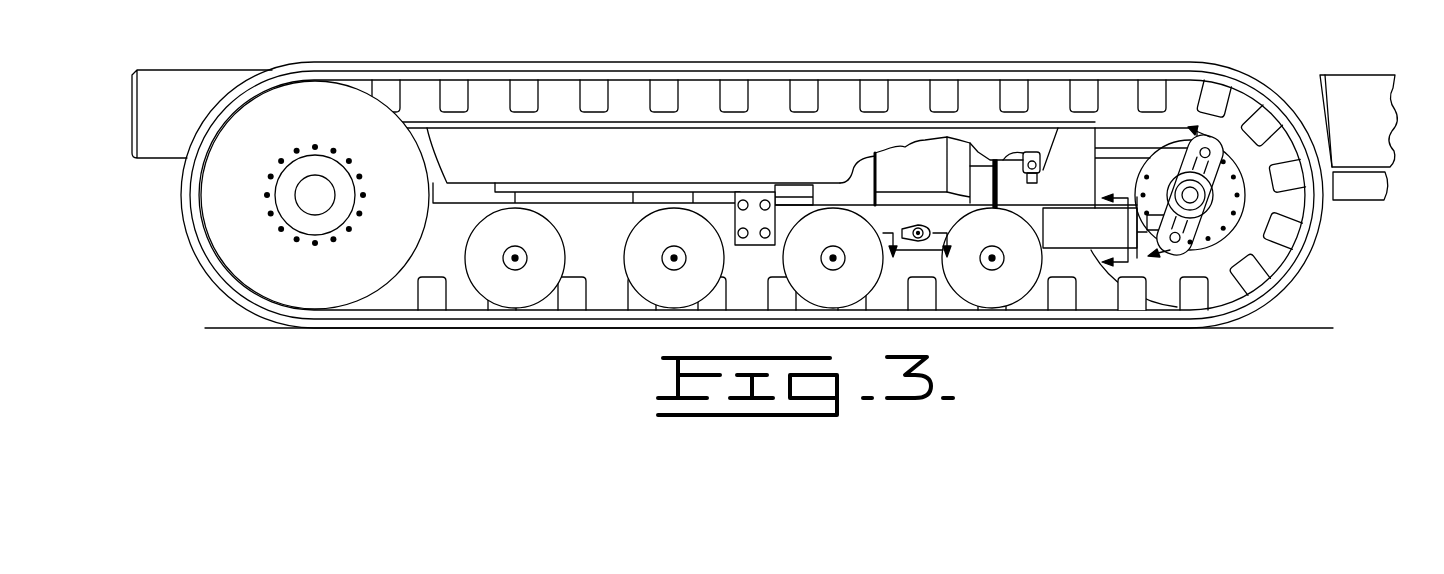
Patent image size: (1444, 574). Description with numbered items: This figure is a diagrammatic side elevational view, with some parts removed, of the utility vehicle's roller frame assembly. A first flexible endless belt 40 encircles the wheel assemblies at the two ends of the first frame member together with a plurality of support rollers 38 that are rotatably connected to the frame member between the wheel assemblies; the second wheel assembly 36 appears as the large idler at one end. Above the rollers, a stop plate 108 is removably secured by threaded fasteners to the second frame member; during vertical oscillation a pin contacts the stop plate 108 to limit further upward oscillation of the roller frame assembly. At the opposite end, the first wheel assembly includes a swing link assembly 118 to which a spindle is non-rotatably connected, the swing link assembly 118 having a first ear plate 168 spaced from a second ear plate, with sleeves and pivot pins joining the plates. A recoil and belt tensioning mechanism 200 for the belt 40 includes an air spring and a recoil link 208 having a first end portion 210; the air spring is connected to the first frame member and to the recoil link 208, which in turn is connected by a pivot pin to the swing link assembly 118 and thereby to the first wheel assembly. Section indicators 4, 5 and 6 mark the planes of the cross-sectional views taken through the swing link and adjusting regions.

The second wheel assembly 36 is at (262, 272).
The support rollers 38 is at (648, 231).
The first flexible endless belt 40 is at (899, 74).
The stop plate 108 is at (770, 220).
The swing link assembly 118 is at (1260, 179).
The first ear plate 168 is at (1207, 177).
The recoil and belt tensioning mechanism 200 is at (1116, 125).
The recoil link 208 is at (1160, 170).
The first end portion of recoil link 210 is at (1137, 208).
The section line 4- 4 is at (1187, 201).
The section line 5- 5 is at (1123, 225).
The section line 6- 6 is at (917, 229).